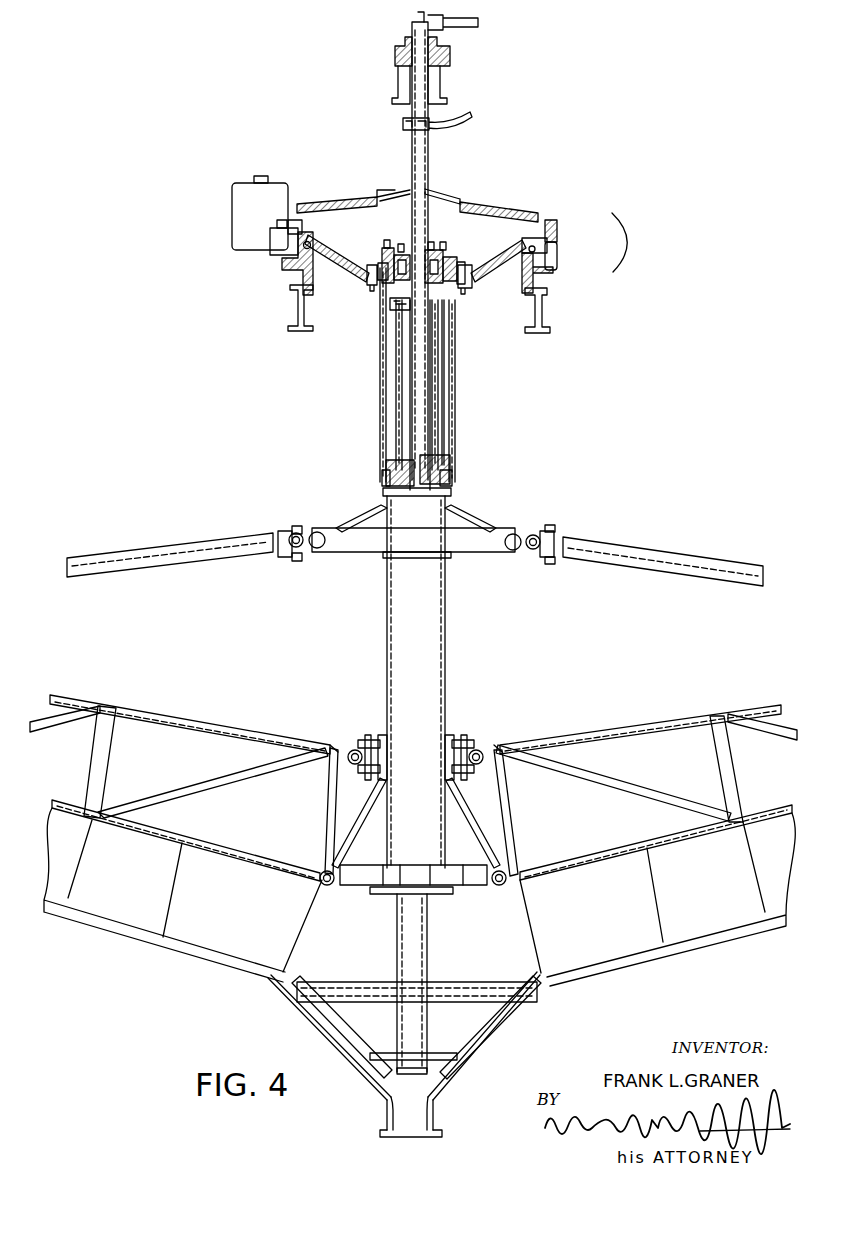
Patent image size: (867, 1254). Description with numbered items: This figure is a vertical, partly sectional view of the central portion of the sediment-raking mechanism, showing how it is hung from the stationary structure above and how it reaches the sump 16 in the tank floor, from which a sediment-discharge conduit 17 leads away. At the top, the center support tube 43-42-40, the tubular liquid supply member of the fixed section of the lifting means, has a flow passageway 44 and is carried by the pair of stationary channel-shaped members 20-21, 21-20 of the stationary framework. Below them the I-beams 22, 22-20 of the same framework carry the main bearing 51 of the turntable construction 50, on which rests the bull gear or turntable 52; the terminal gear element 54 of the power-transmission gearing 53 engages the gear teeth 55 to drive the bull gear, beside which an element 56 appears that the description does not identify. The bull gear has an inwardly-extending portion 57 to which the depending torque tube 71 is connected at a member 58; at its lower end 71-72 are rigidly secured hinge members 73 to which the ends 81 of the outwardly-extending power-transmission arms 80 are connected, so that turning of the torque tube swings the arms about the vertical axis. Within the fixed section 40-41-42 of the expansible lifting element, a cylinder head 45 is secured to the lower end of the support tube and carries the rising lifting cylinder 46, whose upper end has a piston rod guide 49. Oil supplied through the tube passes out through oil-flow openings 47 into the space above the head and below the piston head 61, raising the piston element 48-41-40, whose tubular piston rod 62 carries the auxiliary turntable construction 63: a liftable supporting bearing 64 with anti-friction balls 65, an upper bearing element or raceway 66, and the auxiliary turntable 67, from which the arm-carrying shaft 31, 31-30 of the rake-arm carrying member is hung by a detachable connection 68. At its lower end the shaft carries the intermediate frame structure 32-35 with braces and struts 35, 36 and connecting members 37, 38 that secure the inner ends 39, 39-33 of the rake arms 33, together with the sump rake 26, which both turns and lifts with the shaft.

The sump 16 is at (423, 1105).
The sediment-discharge conduit 17 is at (387, 1120).
The stationary channel-shaped members of stationary framework 20-21 is at (396, 99).
The stationary channel-shaped members of stationary framework 21-20 is at (441, 100).
The I-beams 22 is at (297, 315).
The I-beams of stationary framework 22-20 is at (546, 313).
The sump rake 26 is at (515, 1022).
The arm-carrying shaft 31 is at (455, 357).
The arm-carrying shaft of liftable rake-arm carrying member 31-30 is at (446, 634).
The braces and struts of intermediate frame structure 32-35 is at (478, 884).
The rake arms 33 is at (630, 722).
The braces and struts 35 is at (384, 865).
The braces and struts 36 is at (473, 814).
The connecting members 37 is at (498, 883).
The connecting members 38 is at (455, 733).
The inner ends of rake arms 39 is at (317, 884).
The inner ends of the rake arms 39-33 is at (492, 754).
The fixed section of the expansible lifting element 40-41-42 is at (324, 490).
The center support tube 43-42-40 is at (430, 158).
The flow passageway 44 is at (428, 185).
The cylinder head 45 is at (400, 497).
The lifting cylinder 46 is at (390, 457).
The oil-flow openings 47 is at (442, 494).
The vertically movable piston element 48-41-40 is at (507, 420).
The piston rod guide 49 is at (391, 305).
The turntable construction 50 is at (627, 242).
The main bearing 51 is at (553, 270).
The bull gear 52 is at (546, 228).
The power-transmission gearing 53 is at (232, 196).
The terminal gear element 54 is at (272, 258).
The gear teeth 55 is at (304, 244).
The pivot fitting 56 is at (548, 247).
The inwardly-extending portion of bull gear 57 is at (360, 280).
The connecting member 58 is at (470, 290).
The piston head 61 is at (446, 470).
The tubular piston rod 62 is at (438, 425).
The auxiliary turntable construction 63 is at (470, 246).
The supporting bearing 64 is at (452, 264).
The anti-friction rollers 65 is at (387, 240).
The upper turnably-supported bearing element 66 is at (432, 242).
The auxiliary turntable 67 is at (459, 262).
The detachable connection 68 is at (382, 250).
The torque tube 71 is at (380, 386).
The lower end of torque tube 71-72 is at (408, 518).
The hinge members 73 is at (530, 530).
The power-transmission arms 80 is at (660, 549).
The ends of power-transmission arms 81 is at (563, 536).